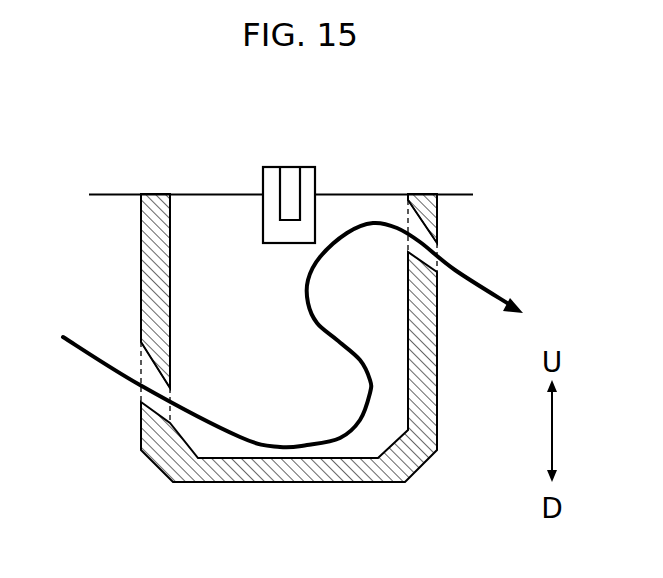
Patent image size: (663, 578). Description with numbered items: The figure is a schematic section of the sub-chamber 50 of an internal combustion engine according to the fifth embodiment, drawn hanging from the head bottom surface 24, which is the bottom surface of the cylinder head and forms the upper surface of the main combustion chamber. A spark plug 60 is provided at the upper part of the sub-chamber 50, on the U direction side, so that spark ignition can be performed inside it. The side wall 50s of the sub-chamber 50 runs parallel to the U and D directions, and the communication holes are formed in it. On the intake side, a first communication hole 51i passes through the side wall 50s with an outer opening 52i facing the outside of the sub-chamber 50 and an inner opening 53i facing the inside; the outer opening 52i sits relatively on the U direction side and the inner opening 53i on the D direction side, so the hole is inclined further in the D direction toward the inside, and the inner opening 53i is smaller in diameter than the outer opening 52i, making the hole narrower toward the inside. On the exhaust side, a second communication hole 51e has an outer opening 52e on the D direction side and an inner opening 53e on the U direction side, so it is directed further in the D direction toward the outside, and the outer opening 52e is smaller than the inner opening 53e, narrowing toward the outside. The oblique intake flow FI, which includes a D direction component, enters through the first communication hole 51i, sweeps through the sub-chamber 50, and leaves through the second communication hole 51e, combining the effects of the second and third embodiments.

The head bottom surface 24 is at (135, 195).
The sub-chamber 50 is at (329, 307).
The side wall 50s is at (430, 360).
The spark plug 60 is at (315, 188).
The first communication hole 51i is at (141, 401).
The outer opening 52i is at (137, 367).
The inner opening 53i is at (173, 390).
The second communication hole 51e is at (438, 263).
The outer opening 52e is at (440, 243).
The inner opening 53e is at (405, 251).
The intake flow FI is at (277, 335).